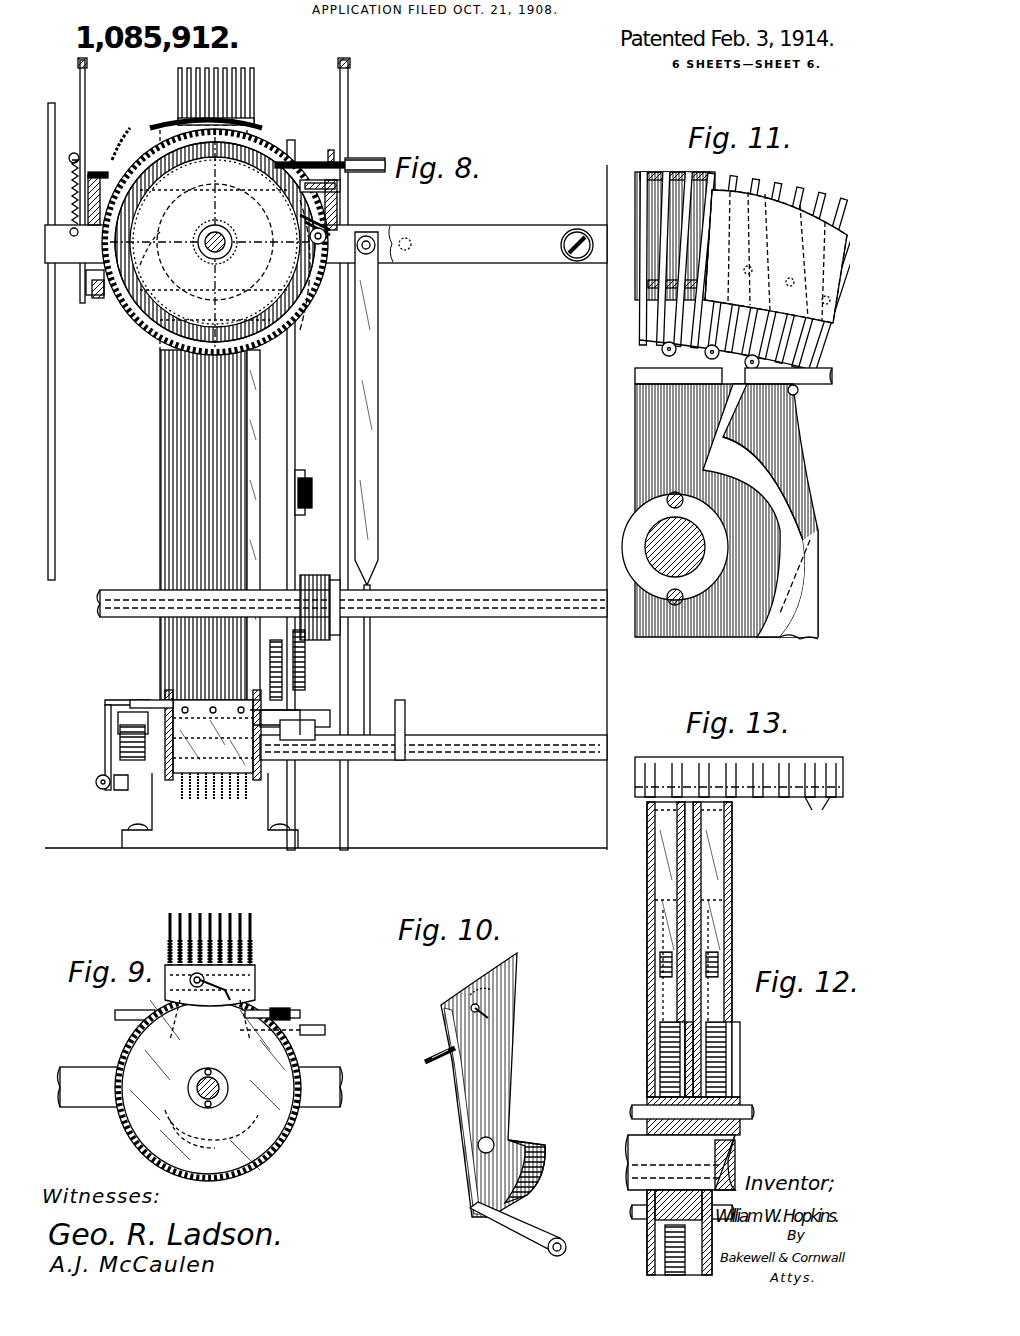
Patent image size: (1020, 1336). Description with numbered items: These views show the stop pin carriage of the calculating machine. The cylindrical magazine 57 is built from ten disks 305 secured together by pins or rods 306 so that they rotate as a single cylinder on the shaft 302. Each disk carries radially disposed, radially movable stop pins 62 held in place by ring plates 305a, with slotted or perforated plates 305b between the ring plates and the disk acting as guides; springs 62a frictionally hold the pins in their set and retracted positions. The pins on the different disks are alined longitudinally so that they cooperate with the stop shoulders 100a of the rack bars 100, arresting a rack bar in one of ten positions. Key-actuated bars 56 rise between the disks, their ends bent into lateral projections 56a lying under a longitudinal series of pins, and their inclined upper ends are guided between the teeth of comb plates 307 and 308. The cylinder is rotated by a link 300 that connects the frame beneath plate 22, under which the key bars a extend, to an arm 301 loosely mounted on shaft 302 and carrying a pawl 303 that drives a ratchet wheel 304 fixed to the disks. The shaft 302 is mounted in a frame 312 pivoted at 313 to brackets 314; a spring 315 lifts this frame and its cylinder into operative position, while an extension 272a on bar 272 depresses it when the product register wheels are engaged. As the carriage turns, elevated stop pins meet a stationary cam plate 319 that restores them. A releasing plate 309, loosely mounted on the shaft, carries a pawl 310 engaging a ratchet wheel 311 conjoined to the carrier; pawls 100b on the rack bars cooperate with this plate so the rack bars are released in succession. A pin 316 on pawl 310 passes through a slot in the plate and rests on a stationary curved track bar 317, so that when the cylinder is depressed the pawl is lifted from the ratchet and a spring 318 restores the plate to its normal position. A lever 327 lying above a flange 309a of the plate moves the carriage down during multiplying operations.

In FIG. 8, the plate 22 is at (213, 735).
In FIG. 8, the bars a is at (185, 805).
In FIG. 8, the key-actuated rods or bars 56 is at (258, 470).
In FIG. 11, the key-actuated rods or bars 56 is at (726, 510).
In FIG. 12, the key-actuated rods or bars 56 is at (735, 1030).
In FIG. 12, the lateral projection 56a is at (732, 950).
In FIG. 8, the cylindrical magazine 57 is at (135, 322).
In FIG. 11, the cylindrical magazine 57 is at (795, 212).
In FIG. 11, the stop pins 62 is at (660, 335).
In FIG. 13, the stop pins 62 is at (817, 816).
In FIG. 12, the stop pins 62 is at (735, 850).
In FIG. 11, the springs 62a is at (665, 210).
In FIG. 8, the rack bars 100 is at (178, 85).
In FIG. 9, the rack bars 100 is at (235, 915).
In FIG. 8, the stop shoulders 100a is at (178, 120).
In FIG. 9, the pawls 100b is at (250, 945).
In FIG. 8, the bar 272 is at (54, 395).
In FIG. 8, the extension 272a is at (78, 295).
In FIG. 8, the link 300 is at (375, 372).
In FIG. 8, the arm 301 is at (370, 254).
In FIG. 8, the shaft 302 is at (212, 232).
In FIG. 11, the shaft 302 is at (702, 560).
In FIG. 12, the shaft 302 is at (681, 1162).
In FIG. 9, the shaft 302 is at (200, 1088).
In FIG. 8, the pawl 303 is at (330, 215).
In FIG. 9, the pawl 303 is at (325, 1030).
In FIG. 8, the ratchet wheel 304 is at (138, 280).
In FIG. 8, the disks 305 is at (325, 300).
In FIG. 11, the disks 305 is at (800, 465).
In FIG. 13, the disks 305 is at (830, 745).
In FIG. 12, the disks 305 is at (647, 880).
In FIG. 11, the ring plates 305a is at (752, 232).
In FIG. 12, the ring plates 305a is at (732, 905).
In FIG. 13, the slotted or perforated plates 305b is at (762, 797).
In FIG. 11, the pins or rods 306 is at (667, 595).
In FIG. 12, the pins or rods 306 is at (640, 1108).
In FIG. 8, the comb plate 307 is at (96, 180).
In FIG. 11, the comb plate 307 is at (635, 376).
In FIG. 8, the comb plate 308 is at (340, 186).
In FIG. 11, the comb plate 308 is at (818, 385).
In FIG. 8, the plate 309 is at (262, 128).
In FIG. 9, the plate 309 is at (245, 972).
In FIG. 10, the plate 309 is at (510, 978).
In FIG. 9, the flange 309a is at (195, 1140).
In FIG. 10, the flange 309a is at (540, 1165).
In FIG. 9, the pawl 310 is at (220, 985).
In FIG. 10, the pawl 310 is at (495, 1008).
In FIG. 9, the ratchet wheel 311 is at (285, 1120).
In FIG. 8, the frame 312 is at (326, 244).
In FIG. 8, the pivot 313 is at (576, 258).
In FIG. 8, the brackets 314 is at (592, 232).
In FIG. 8, the spring 315 is at (70, 190).
In FIG. 9, the pin 316 is at (215, 995).
In FIG. 10, the pin 316 is at (488, 1020).
In FIG. 9, the curved track bar 317 is at (115, 1015).
In FIG. 8, the spring 318 is at (365, 160).
In FIG. 9, the spring 318 is at (290, 1005).
In FIG. 8, the cam plate 319 is at (128, 122).
In FIG. 10, the lever 327 is at (510, 1228).